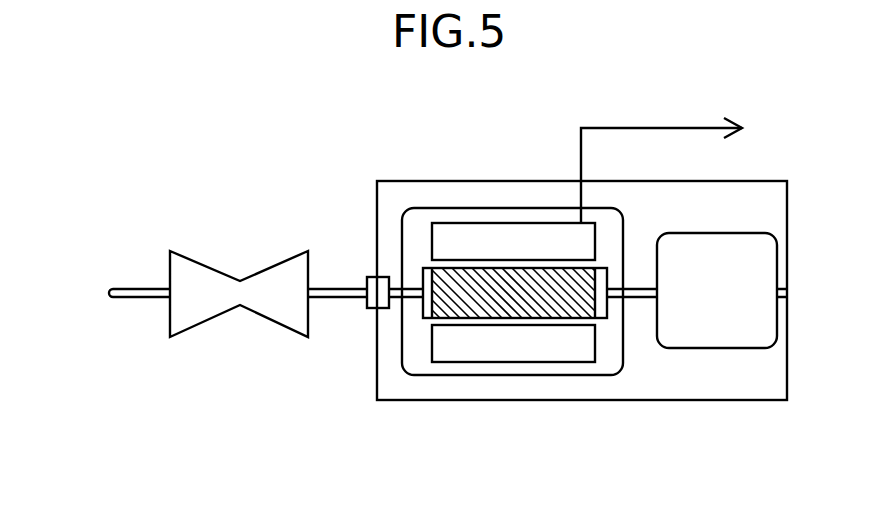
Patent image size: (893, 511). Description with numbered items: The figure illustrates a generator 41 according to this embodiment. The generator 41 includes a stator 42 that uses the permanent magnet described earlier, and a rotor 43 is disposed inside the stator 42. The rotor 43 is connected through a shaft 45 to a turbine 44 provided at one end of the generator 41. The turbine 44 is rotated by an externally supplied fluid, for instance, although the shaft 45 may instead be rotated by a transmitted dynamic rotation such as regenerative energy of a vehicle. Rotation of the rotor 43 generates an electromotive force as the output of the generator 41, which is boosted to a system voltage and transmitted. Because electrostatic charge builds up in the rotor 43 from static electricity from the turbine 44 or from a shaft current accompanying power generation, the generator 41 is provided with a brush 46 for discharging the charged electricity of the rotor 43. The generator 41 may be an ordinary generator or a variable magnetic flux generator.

The generator 41 is at (420, 182).
The stator 42 is at (485, 352).
The rotor 43 is at (527, 308).
The turbine 44 is at (280, 258).
The shaft 45 is at (342, 300).
The brush 46 is at (715, 333).